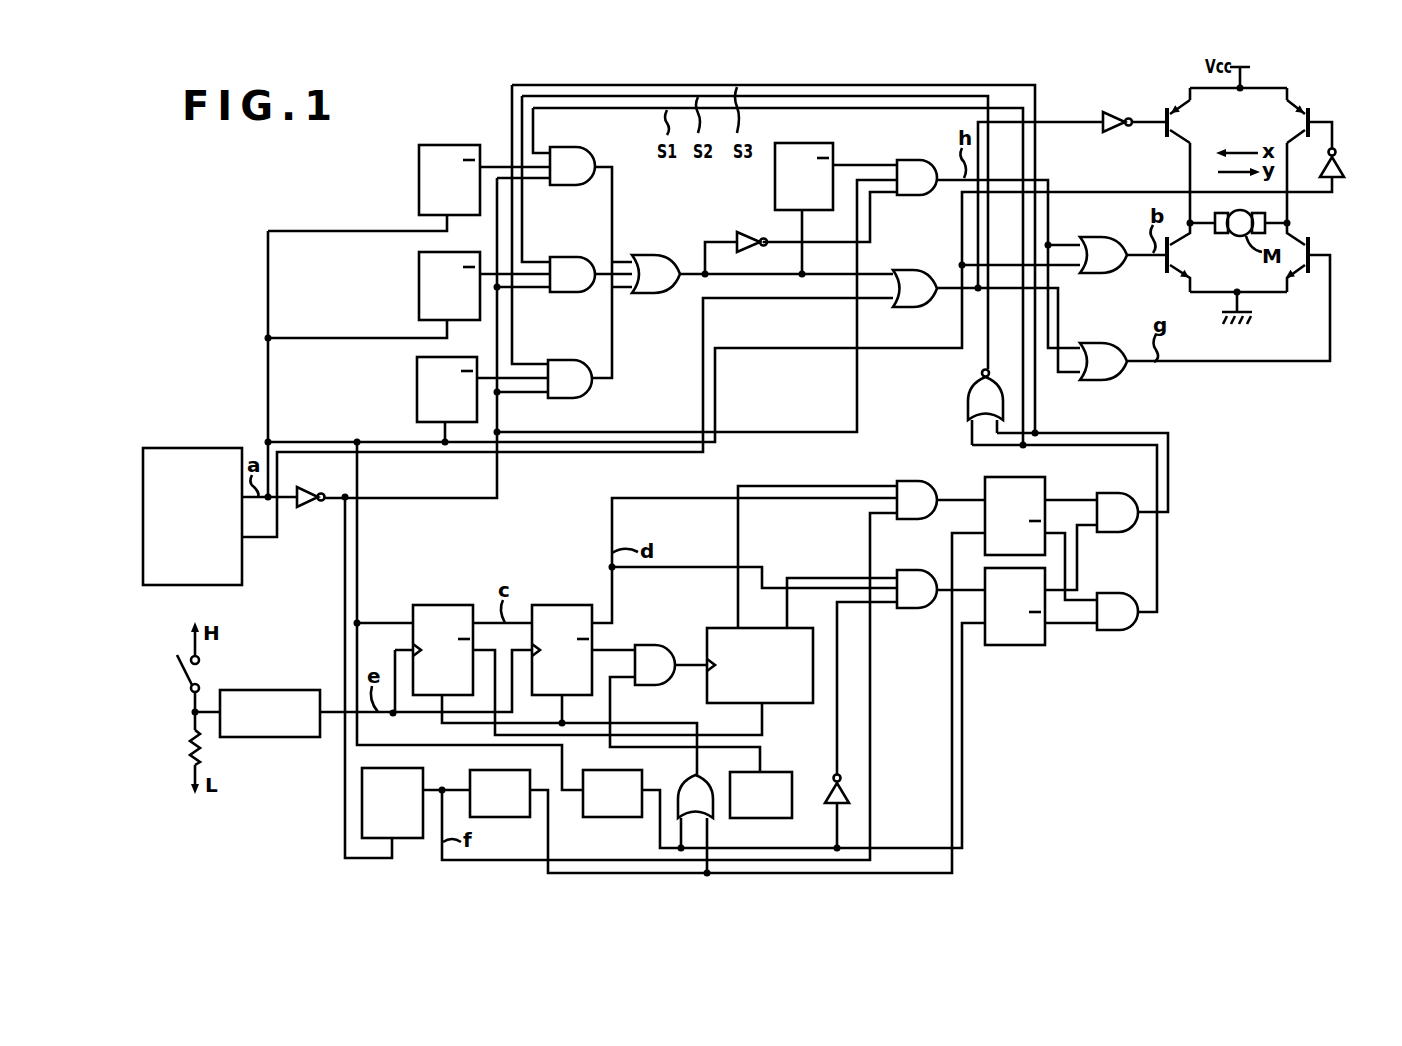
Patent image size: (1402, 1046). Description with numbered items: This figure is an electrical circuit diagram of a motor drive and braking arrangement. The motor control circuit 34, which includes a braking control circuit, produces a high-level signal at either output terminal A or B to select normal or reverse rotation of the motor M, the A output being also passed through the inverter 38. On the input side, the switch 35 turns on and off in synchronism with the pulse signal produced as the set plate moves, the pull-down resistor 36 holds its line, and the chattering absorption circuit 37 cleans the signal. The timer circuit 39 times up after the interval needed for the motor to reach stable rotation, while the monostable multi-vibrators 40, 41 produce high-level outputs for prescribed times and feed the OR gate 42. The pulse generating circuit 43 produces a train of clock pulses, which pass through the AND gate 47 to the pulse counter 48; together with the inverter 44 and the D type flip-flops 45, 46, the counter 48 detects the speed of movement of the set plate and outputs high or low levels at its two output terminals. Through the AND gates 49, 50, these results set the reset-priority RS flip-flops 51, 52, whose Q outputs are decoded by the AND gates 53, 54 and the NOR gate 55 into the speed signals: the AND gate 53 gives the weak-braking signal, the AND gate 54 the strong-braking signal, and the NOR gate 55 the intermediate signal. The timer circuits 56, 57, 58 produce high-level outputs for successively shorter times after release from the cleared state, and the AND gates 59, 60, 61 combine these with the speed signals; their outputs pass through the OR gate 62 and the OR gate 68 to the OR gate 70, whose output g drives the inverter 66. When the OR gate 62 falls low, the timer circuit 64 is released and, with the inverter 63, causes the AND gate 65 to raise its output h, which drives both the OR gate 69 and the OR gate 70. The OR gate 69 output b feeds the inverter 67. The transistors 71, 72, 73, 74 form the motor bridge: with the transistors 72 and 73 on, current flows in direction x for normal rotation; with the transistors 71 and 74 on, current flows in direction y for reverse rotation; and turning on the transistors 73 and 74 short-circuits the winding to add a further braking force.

The motor control circuit 34 is at (165, 448).
The switch 35 is at (185, 676).
The pull-down resistor 36 is at (190, 750).
The chattering absorption circuit 37 is at (300, 690).
The inverter 38 is at (310, 508).
The timer circuit 39 is at (423, 786).
The monostable multi-vibrator 40 is at (512, 818).
The monostable multi-vibrator 41 is at (625, 818).
The OR gate 42 is at (690, 778).
The pulse generating circuit 43 is at (793, 776).
The inverter 44 is at (843, 786).
The D type flip-flop 45 is at (458, 605).
The D type flip-flop 46 is at (578, 605).
The AND gate 47 is at (652, 645).
The pulse counter 48 is at (712, 628).
The AND gate 49 is at (914, 520).
The AND gate 50 is at (914, 610).
The RS flip-flop 51 is at (1046, 492).
The RS flip-flop 52 is at (1046, 645).
The AND gate 53 is at (1115, 493).
The AND gate 54 is at (1115, 593).
The NOR gate 55 is at (962, 396).
The timer circuit 56 is at (419, 160).
The timer circuit 57 is at (419, 268).
The timer circuit 58 is at (417, 373).
The AND gate 59 is at (582, 149).
The AND gate 60 is at (568, 257).
The AND gate 61 is at (568, 360).
The OR gate 62 is at (658, 255).
The inverter 63 is at (748, 232).
The timer circuit 64 is at (834, 150).
The AND gate 65 is at (922, 160).
The inverter 66 is at (1118, 115).
The inverter 67 is at (1346, 162).
The OR gate 68 is at (915, 270).
The OR gate 69 is at (1105, 240).
The OR gate 70 is at (1108, 345).
The transistor 71 is at (1194, 122).
The transistor 72 is at (1305, 107).
The transistor 73 is at (1192, 258).
The transistor 74 is at (1302, 245).